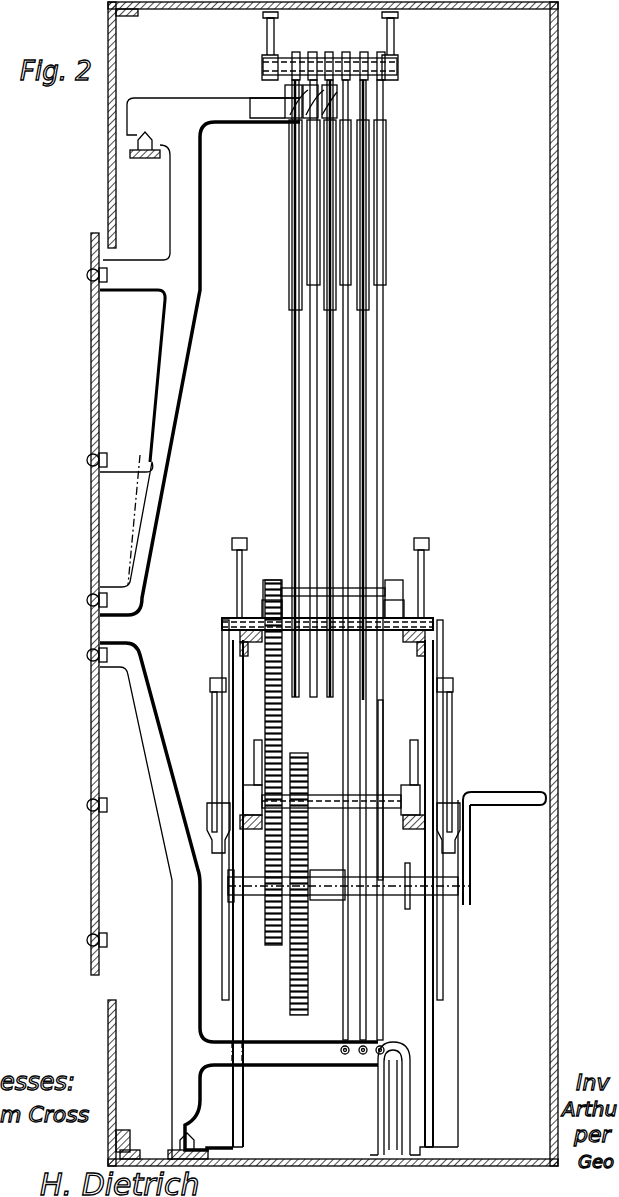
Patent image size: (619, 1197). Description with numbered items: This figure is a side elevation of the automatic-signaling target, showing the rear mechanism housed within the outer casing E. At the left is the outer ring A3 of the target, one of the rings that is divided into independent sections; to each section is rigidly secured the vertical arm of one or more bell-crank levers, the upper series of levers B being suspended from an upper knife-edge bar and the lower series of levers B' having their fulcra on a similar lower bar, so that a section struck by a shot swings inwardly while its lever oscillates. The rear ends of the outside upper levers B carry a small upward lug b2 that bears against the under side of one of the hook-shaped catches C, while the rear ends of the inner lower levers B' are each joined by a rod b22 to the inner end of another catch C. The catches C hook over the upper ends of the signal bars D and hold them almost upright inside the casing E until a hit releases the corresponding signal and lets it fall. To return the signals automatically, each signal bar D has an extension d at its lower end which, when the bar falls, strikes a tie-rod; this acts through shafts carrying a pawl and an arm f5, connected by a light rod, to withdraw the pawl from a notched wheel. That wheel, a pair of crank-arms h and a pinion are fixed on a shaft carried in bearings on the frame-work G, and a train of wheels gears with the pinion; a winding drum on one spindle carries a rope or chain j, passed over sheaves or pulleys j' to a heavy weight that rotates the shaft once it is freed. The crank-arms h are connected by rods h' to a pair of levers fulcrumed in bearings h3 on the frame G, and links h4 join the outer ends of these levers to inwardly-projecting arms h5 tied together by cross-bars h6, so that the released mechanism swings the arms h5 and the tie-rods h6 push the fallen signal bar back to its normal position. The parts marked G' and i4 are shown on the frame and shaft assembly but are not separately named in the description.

The outer casing E is at (552, 370).
The outer ring A3 is at (90, 320).
The upper bell-crank lever B is at (200, 356).
The lower bell-crank lever B' is at (239, 901).
The upward extension or lug b2 is at (296, 96).
The rod b22 is at (383, 96).
The hook-shaped catch or retaining-bar C is at (296, 66).
The signal bar or rod D is at (300, 372).
The extension d is at (372, 683).
The frame-work G is at (347, 882).
The frame bearing G' is at (332, 836).
The arm f5 is at (438, 578).
The crank-arm h is at (331, 810).
The rod h' is at (333, 755).
The bearing h3 is at (337, 786).
The link h4 is at (334, 752).
The inwardly-projecting arm h5 is at (268, 584).
The cross-bar or tie-rod h6 is at (266, 610).
The hub i4 is at (372, 878).
The rope or chain j is at (349, 904).
The sheave or pulley j' is at (392, 1098).